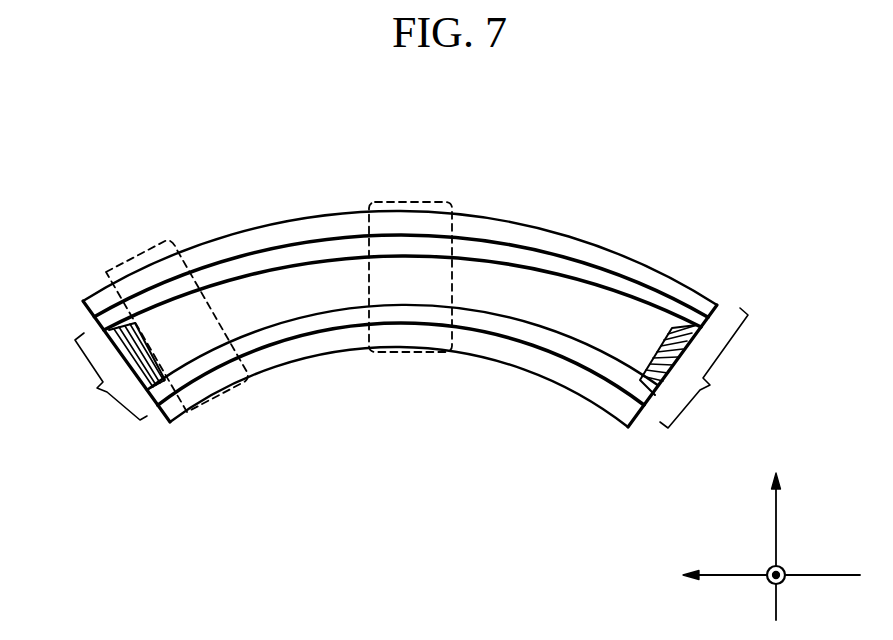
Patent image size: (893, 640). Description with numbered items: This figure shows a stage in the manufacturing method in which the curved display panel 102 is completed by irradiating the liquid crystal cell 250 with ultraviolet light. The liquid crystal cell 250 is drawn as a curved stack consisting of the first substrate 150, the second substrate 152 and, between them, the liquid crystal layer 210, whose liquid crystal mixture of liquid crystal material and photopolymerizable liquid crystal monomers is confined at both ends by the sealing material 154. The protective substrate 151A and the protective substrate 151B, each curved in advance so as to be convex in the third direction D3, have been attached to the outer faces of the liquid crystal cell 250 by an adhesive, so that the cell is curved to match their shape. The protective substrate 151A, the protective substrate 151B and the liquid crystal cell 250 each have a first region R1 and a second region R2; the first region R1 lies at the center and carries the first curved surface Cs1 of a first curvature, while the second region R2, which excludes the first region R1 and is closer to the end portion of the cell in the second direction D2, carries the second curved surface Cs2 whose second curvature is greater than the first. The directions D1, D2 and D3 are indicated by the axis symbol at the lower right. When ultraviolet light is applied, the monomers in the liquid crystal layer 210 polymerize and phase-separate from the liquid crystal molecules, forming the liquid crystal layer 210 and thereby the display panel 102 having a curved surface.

The protective substrate 151B is at (521, 222).
The second substrate 152 is at (563, 231).
The liquid crystal layer 210 is at (590, 297).
The first substrate 150 is at (343, 328).
The protective substrate 151A is at (498, 358).
The liquid crystal cell 250 is at (110, 361).
The display panel 102 is at (695, 366).
The sealing material 154 is at (147, 395).
The first curved surface Cs1 is at (428, 203).
The second curved surface Cs2 is at (155, 248).
The first region R1 is at (377, 203).
The second region R2 is at (107, 277).
The first direction D1 is at (758, 590).
The second direction D2 is at (750, 575).
The third direction D3 is at (775, 533).